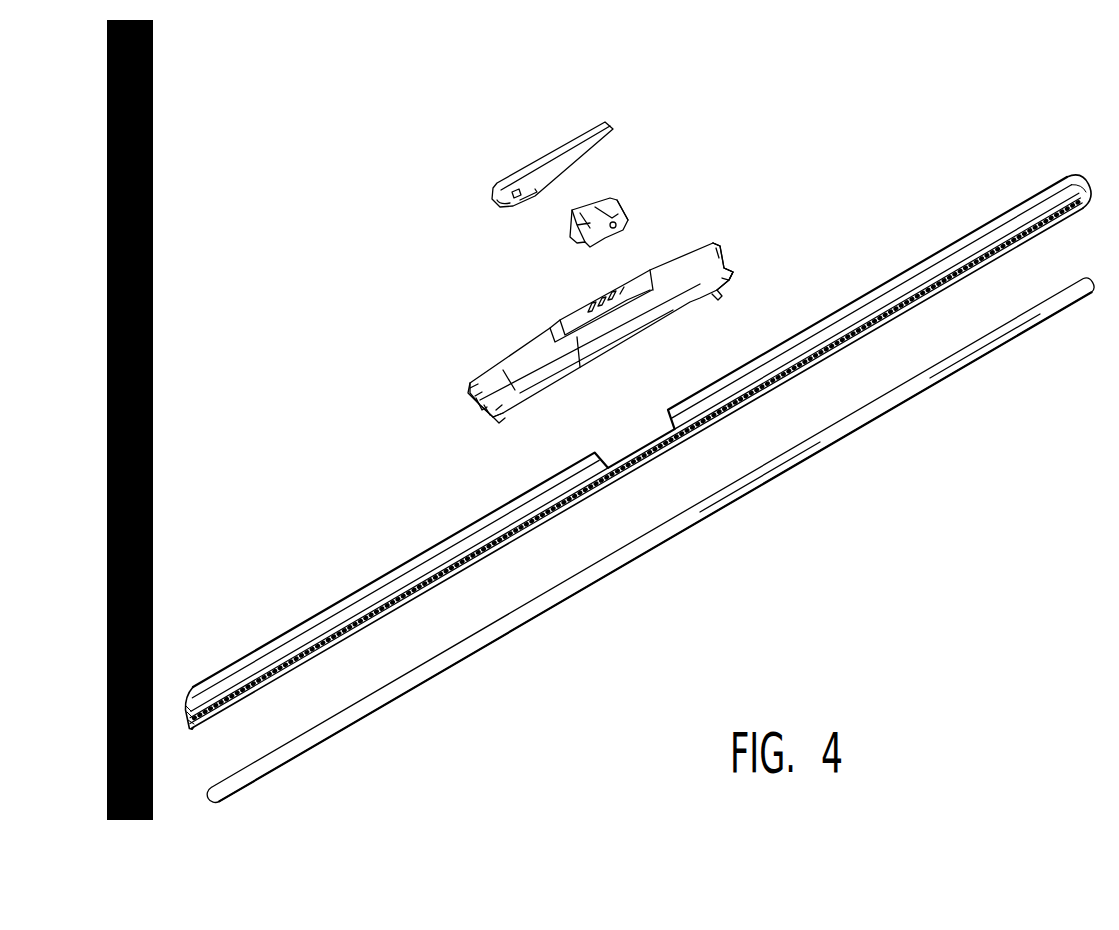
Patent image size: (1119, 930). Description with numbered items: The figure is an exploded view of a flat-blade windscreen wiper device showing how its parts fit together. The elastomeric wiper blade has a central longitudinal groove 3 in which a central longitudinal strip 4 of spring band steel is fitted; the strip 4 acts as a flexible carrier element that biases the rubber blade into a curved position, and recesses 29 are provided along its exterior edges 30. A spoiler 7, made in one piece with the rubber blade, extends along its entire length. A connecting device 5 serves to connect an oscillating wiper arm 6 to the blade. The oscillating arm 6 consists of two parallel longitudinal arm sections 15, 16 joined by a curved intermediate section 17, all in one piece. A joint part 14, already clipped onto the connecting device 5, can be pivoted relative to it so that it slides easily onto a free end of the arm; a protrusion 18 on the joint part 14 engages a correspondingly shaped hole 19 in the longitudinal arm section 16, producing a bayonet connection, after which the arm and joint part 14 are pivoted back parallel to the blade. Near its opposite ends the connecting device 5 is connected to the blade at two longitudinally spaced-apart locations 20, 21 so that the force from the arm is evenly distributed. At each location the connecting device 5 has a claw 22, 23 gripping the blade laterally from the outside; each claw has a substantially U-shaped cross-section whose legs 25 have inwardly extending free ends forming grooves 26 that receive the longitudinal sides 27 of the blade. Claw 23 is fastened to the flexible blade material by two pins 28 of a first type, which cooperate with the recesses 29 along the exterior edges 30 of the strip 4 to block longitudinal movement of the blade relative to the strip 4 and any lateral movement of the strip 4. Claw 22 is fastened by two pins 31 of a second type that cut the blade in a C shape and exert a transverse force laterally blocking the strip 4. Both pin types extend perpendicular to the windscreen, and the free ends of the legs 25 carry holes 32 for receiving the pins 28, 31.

The central longitudinal groove 3 is at (568, 418).
The central longitudinal strip 4 is at (650, 540).
The connecting device 5 is at (617, 337).
The oscillating wiper arm 6 is at (565, 182).
The spoiler 7 is at (990, 228).
The joint part 14 is at (644, 188).
The longitudinal arm section 15 is at (510, 205).
The longitudinal arm section 16 is at (513, 203).
The curved intermediate section 17 is at (490, 197).
The protrusion 18 is at (628, 215).
The hole 19 is at (527, 187).
The location 20 is at (564, 318).
The location 21 is at (773, 201).
The claw 22 is at (464, 451).
The claw 23 is at (725, 248).
The legs 25 is at (467, 393).
The grooves 26 is at (483, 417).
The longitudinal sides 27 is at (357, 633).
The pins of a first type 28 is at (728, 292).
The recesses 29 is at (767, 478).
The exterior edges 30 is at (983, 335).
The pins of a second type 31 is at (498, 420).
The holes 32 is at (731, 264).